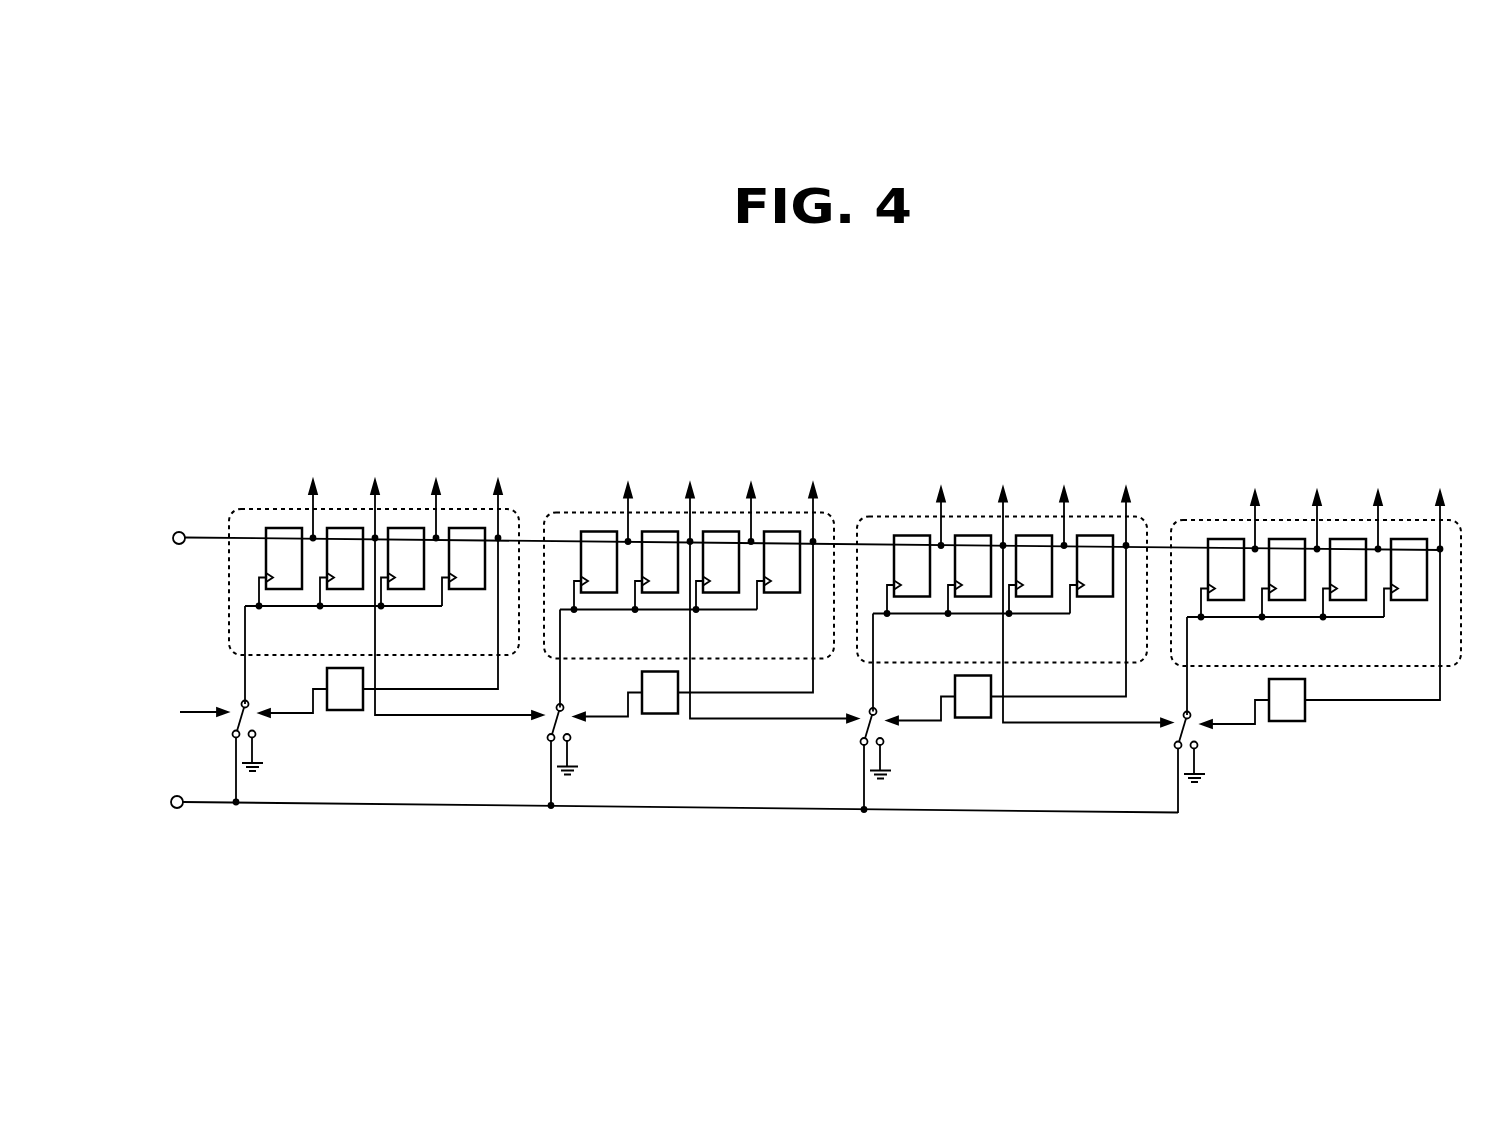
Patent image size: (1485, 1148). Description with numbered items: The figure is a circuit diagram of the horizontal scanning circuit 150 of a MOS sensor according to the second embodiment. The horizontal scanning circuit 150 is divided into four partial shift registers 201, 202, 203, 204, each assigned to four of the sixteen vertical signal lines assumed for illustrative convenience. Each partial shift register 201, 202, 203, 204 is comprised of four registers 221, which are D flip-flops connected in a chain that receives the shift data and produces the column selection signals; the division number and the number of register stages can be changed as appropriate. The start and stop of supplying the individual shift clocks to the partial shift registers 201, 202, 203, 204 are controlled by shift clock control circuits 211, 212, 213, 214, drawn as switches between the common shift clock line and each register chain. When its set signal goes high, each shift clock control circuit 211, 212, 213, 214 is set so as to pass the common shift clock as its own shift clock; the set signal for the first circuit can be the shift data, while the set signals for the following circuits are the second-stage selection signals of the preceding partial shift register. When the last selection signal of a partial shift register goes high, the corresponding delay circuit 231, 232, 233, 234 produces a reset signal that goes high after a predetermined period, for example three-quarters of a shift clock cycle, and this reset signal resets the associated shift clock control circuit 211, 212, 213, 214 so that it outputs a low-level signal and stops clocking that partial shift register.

The horizontal scanning circuit 150 is at (834, 400).
The partial shift register 201 is at (468, 510).
The partial shift register 202 is at (701, 567).
The partial shift register 203 is at (1014, 570).
The partial shift register 204 is at (1316, 565).
The shift clock control circuit 211 is at (265, 740).
The shift clock control circuit 212 is at (574, 750).
The shift clock control circuit 213 is at (887, 754).
The shift clock control circuit 214 is at (1201, 756).
The register 221 is at (283, 528).
The delay circuit 231 is at (345, 711).
The delay circuit 232 is at (692, 656).
The delay circuit 233 is at (1005, 660).
The delay circuit 234 is at (1319, 663).